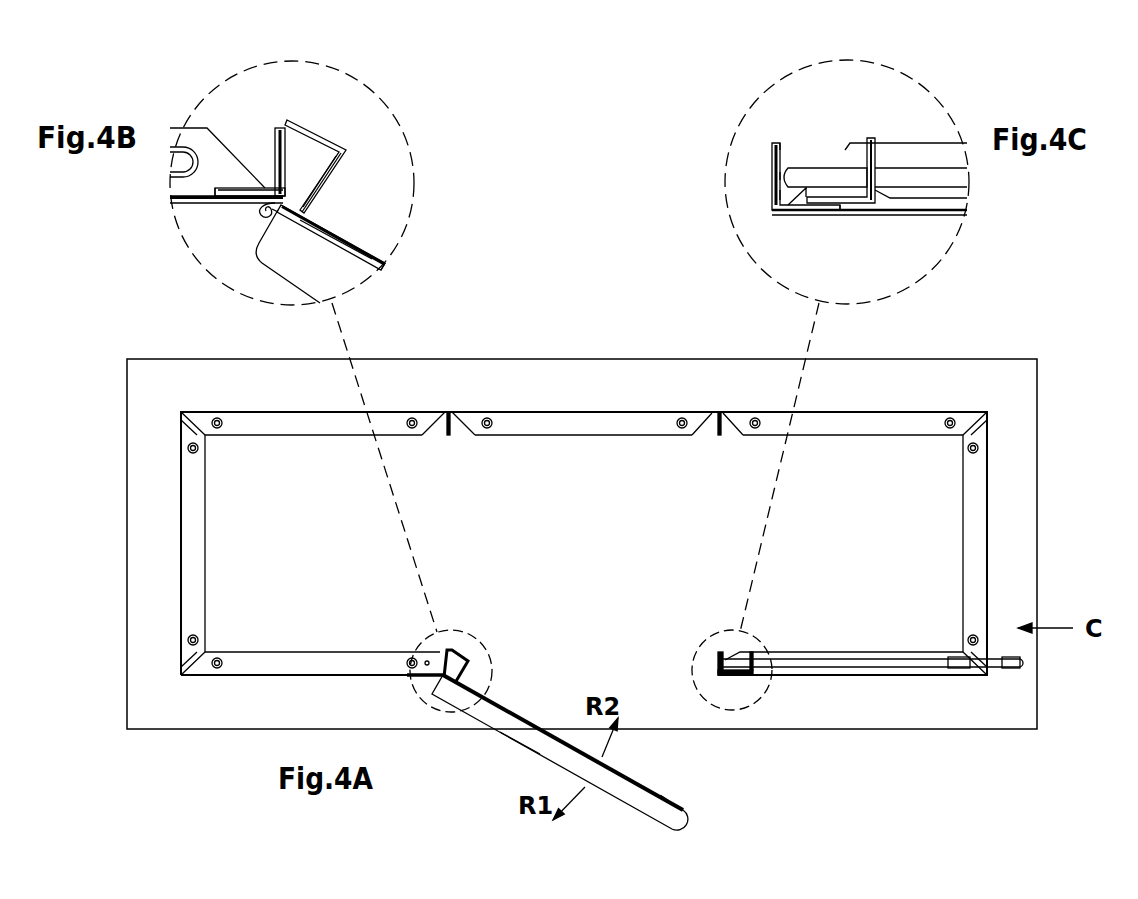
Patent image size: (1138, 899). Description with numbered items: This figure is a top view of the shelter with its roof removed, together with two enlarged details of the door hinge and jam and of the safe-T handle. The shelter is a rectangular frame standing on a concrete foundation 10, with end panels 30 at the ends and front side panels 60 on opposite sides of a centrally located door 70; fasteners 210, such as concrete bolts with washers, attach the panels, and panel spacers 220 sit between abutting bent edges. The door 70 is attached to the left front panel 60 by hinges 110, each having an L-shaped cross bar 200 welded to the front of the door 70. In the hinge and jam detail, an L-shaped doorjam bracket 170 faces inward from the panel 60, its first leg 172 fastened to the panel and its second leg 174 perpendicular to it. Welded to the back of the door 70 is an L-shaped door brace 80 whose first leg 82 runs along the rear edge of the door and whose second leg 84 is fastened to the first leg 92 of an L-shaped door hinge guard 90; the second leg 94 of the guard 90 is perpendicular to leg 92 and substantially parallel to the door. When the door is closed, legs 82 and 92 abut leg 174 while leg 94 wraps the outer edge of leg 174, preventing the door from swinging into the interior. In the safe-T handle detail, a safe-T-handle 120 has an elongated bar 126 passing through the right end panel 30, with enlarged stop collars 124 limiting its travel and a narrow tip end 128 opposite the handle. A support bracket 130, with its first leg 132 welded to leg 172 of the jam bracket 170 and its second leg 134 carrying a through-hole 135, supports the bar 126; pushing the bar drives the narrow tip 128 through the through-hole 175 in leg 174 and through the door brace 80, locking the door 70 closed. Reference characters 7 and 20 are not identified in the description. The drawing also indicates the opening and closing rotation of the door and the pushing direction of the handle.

In FIG. 4B, the door assembly 7 is at (393, 250).
In FIG. 4A, the foundation 10 is at (830, 710).
In FIG. 4B, the frame member 20 is at (355, 272).
In FIG. 4A, the end panel 30 is at (987, 548).
In FIG. 4B, the front side panel 60 is at (197, 195).
In FIG. 4C, the front side panel 60 is at (920, 213).
In FIG. 4A, the front side panel 60 is at (258, 675).
In FIG. 4A, the door 70 is at (520, 717).
In FIG. 4B, the door brace 80 is at (342, 228).
In FIG. 4A, the door brace 80 is at (693, 790).
In FIG. 4B, the first leg of door brace 82 is at (360, 238).
In FIG. 4B, the second leg of door brace 84 is at (275, 213).
In FIG. 4B, the door hinge guard 90 is at (303, 127).
In FIG. 4B, the first leg of door hinge guard 92 is at (330, 170).
In FIG. 4B, the second leg of door hinge guard 94 is at (323, 153).
In FIG. 4B, the hinge 110 is at (272, 208).
In FIG. 4A, the safe-T-handle 120 is at (1023, 665).
In FIG. 4A, the stop collar 124 is at (1013, 665).
In FIG. 4C, the elongated bar 126 is at (837, 180).
In FIG. 4A, the elongated bar 126 is at (828, 665).
In FIG. 4C, the narrow tip end 128 is at (772, 192).
In FIG. 4C, the support bracket 130 is at (838, 166).
In FIG. 4C, the first leg of support bracket 132 is at (855, 203).
In FIG. 4C, the second leg of support bracket 134 is at (875, 157).
In FIG. 4C, the through-hole of support bracket 135 is at (877, 190).
In FIG. 4B, the door jam angle bracket 170 is at (266, 186).
In FIG. 4C, the door jam angle bracket 170 is at (795, 207).
In FIG. 4B, the first leg of door jam bracket 172 is at (227, 186).
In FIG. 4C, the first leg of door jam bracket 172 is at (810, 210).
In FIG. 4B, the second leg of door jam bracket 174 is at (279, 130).
In FIG. 4C, the second leg of door jam bracket 174 is at (770, 150).
In FIG. 4C, the through-hole of door jam bracket 175 is at (772, 175).
In FIG. 4A, the L-shaped cross bar 200 is at (518, 733).
In FIG. 4A, the fastener 210 is at (683, 417).
In FIG. 4A, the panel spacer 220 is at (453, 437).